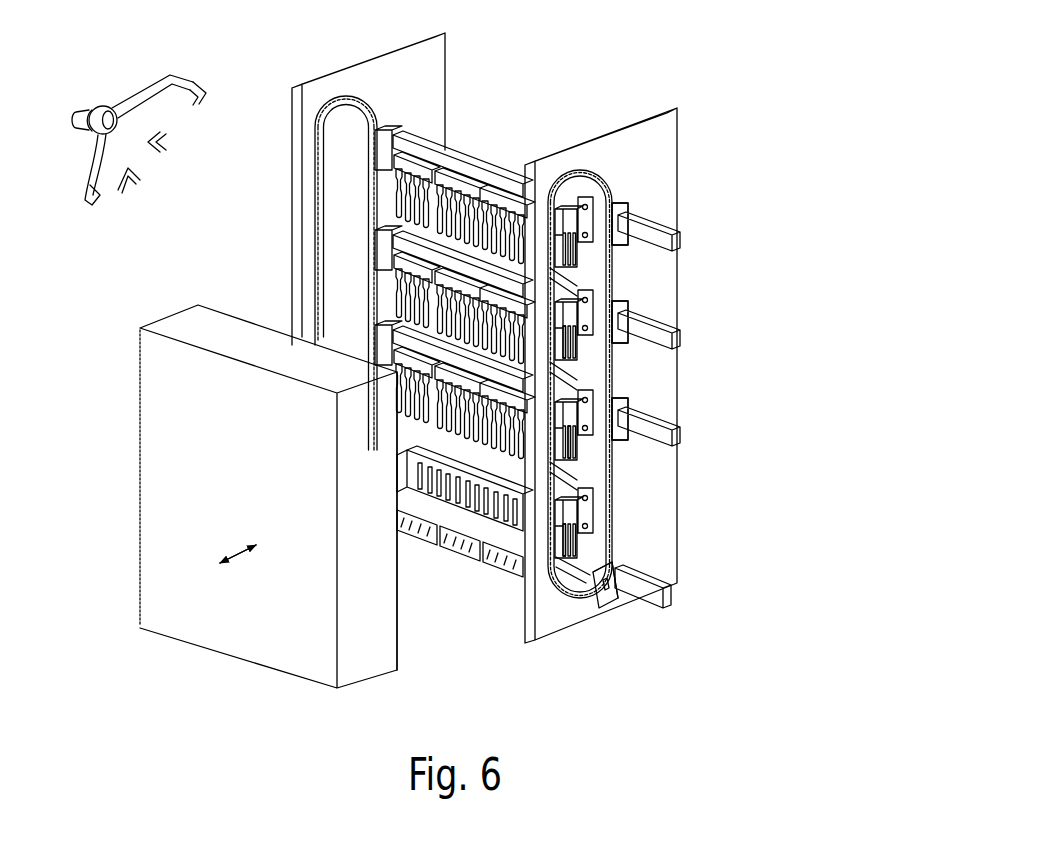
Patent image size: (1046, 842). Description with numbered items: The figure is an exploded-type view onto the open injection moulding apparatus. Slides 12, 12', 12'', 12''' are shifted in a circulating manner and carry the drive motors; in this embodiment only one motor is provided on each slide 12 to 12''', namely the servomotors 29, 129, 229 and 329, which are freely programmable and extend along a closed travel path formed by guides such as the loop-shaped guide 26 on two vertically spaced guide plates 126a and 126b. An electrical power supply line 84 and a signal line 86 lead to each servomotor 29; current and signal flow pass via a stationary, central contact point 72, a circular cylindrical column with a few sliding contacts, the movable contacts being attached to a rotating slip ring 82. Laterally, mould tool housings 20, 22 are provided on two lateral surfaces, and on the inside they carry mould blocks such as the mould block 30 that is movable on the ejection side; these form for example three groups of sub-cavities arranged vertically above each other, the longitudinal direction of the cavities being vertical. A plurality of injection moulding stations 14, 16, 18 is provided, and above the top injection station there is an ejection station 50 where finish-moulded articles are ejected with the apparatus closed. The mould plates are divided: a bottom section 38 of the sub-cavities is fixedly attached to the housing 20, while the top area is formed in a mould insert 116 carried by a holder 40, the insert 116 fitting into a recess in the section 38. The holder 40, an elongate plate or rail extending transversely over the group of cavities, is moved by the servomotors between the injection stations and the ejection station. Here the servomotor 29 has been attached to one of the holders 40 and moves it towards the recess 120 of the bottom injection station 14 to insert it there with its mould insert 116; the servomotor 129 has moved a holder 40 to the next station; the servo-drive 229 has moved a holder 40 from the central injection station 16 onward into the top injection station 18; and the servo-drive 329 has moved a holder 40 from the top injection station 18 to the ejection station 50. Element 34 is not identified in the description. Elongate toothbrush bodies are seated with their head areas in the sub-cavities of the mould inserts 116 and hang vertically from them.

The slide 12 is at (688, 579).
The slide 12' is at (690, 421).
The slide 12'' is at (693, 346).
The slide 12''' is at (692, 244).
The bottom injection station 14 is at (582, 538).
The central injection station 16 is at (580, 448).
The top injection station 18 is at (580, 350).
The mould tool housing 20 is at (437, 212).
The mould tool housing 22 is at (228, 636).
The loop-shaped guide 26 is at (357, 97).
The servomotor 29 is at (671, 598).
The mould block 30 is at (405, 653).
The holder 34 is at (580, 458).
The bottom section of the sub-cavities 38 is at (578, 362).
The holder 40 is at (392, 145).
The ejection station 50 is at (507, 156).
The central contact point 72 is at (78, 112).
The rotating slip ring 82 is at (102, 106).
The electrical power supply line 84 is at (137, 90).
The signal line 86 is at (172, 78).
The mould insert 116 is at (468, 546).
The recess 120 is at (505, 461).
The guide plate 126a is at (665, 145).
The guide plate 126b is at (432, 72).
The servomotor 129 is at (680, 436).
The servo-drive 229 is at (680, 338).
The servo-drive 329 is at (680, 242).